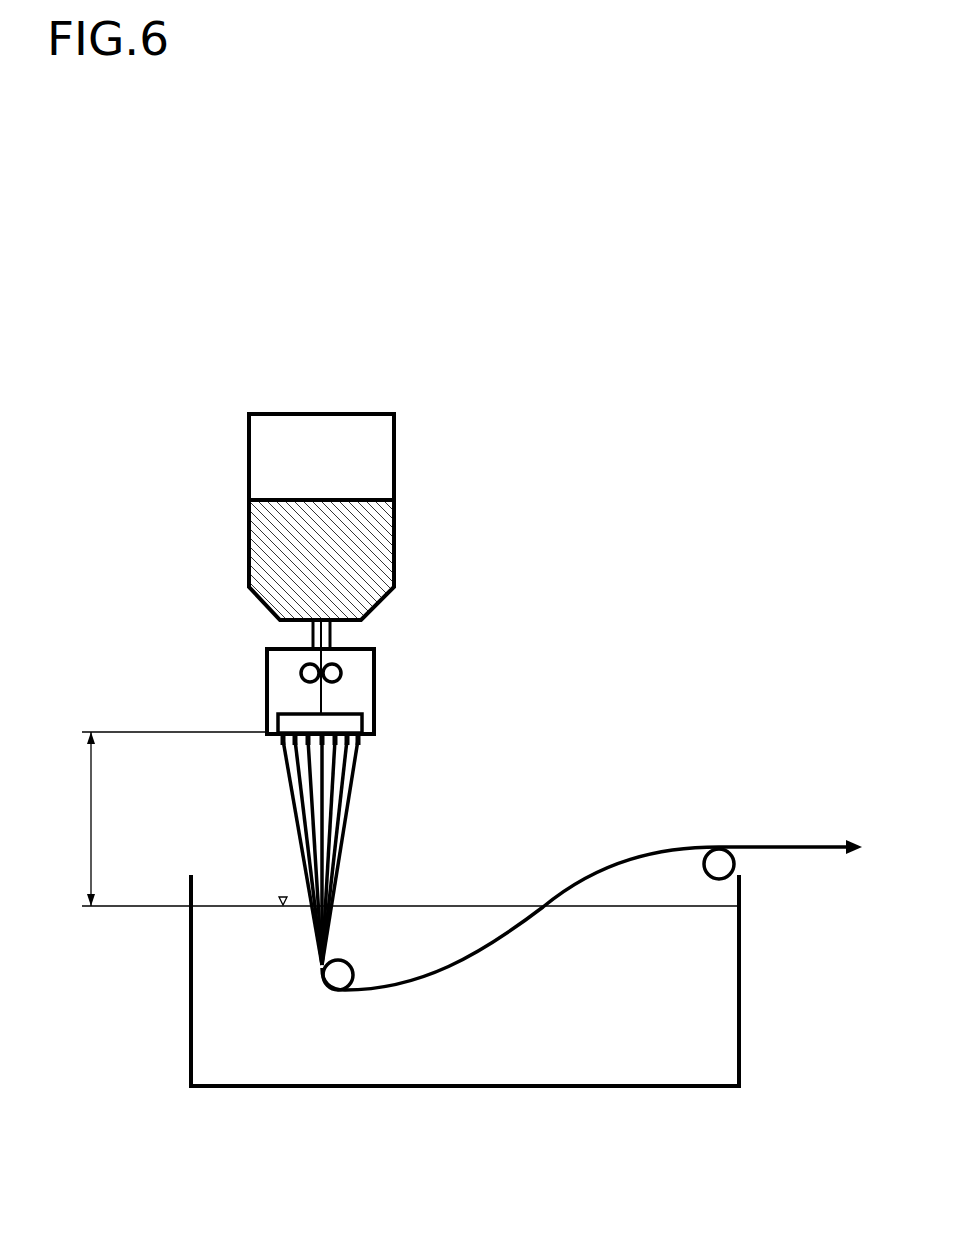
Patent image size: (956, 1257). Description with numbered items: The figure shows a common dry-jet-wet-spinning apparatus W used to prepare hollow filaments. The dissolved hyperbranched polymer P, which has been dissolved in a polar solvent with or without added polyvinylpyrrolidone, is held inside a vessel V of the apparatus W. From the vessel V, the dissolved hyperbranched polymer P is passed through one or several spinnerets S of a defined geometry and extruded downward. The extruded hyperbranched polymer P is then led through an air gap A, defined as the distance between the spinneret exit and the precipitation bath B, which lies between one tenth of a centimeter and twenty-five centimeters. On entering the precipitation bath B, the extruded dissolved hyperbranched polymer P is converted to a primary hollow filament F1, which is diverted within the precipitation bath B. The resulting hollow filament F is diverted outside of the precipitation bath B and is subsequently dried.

The dry-jet-wet-spinning apparatus W is at (158, 573).
The vessel V is at (394, 530).
The hyperbranched polymer P is at (360, 590).
The spinnerets S is at (364, 722).
The primary hollow filament F1 is at (340, 917).
The hollow filament F is at (514, 933).
The precipitation bath B is at (204, 1035).
The air gap A is at (166, 819).